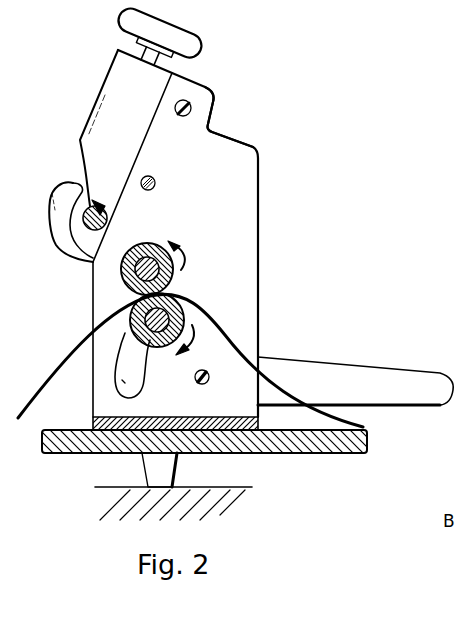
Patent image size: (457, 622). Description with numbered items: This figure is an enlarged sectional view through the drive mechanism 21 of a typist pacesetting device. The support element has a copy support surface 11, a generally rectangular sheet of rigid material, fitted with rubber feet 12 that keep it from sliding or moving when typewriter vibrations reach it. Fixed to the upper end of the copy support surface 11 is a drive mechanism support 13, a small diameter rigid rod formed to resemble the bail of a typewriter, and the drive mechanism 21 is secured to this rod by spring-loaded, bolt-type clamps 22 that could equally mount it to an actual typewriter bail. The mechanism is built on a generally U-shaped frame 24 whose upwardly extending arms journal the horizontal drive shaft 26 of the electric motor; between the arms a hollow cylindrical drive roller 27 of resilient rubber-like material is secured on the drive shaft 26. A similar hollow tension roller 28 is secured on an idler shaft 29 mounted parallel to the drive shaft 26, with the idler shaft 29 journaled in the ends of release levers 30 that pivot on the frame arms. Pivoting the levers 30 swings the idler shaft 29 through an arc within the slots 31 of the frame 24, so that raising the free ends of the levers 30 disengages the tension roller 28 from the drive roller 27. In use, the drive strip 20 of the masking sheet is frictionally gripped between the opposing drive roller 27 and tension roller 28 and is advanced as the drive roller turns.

The copy support surface 11 is at (365, 442).
The rubber feet 12 is at (147, 472).
The drive mechanism support 13 is at (72, 165).
The drive strip 20 is at (228, 350).
The drive mechanism 21 is at (250, 128).
The spring-loaded bolt-type clamps 22 is at (108, 93).
The U-shaped frame 24 is at (207, 128).
The drive shaft 26 is at (133, 297).
The drive roller 27 is at (122, 274).
The tension roller 28 is at (178, 290).
The idler shaft 29 is at (185, 308).
The release levers 30 is at (392, 377).
The slots 31 is at (122, 380).